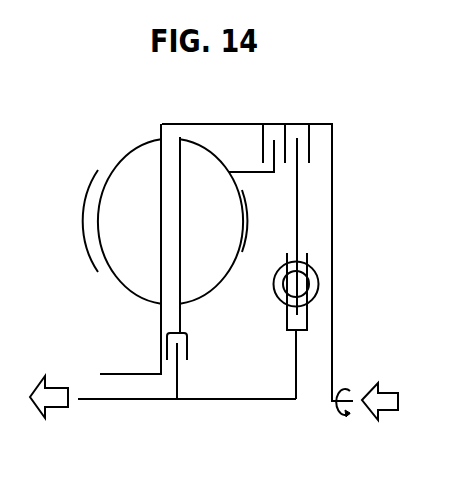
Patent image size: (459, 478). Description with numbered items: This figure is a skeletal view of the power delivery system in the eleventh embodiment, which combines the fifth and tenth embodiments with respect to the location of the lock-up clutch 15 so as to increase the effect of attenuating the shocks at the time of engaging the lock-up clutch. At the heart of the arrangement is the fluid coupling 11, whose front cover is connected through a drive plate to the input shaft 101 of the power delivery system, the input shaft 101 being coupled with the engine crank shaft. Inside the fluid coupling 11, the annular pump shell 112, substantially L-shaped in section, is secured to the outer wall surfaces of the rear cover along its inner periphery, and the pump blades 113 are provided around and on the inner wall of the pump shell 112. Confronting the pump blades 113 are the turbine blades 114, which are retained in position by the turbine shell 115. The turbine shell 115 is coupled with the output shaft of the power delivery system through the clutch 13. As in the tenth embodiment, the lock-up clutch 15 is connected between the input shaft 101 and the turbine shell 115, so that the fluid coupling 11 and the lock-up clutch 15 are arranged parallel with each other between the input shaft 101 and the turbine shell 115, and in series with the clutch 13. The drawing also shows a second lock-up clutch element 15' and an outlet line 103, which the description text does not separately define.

The fluid coupling 11 is at (115, 158).
The pump shell 112 is at (98, 217).
The pump blades 113 is at (147, 233).
The turbine blades 114 is at (230, 233).
The turbine shell 115 is at (242, 217).
The lock-up clutch 15 is at (264, 247).
The inner gas pipe 15' is at (251, 127).
The clutch 13 is at (187, 348).
The outlet line 103 is at (108, 400).
The input shaft 101 is at (349, 391).